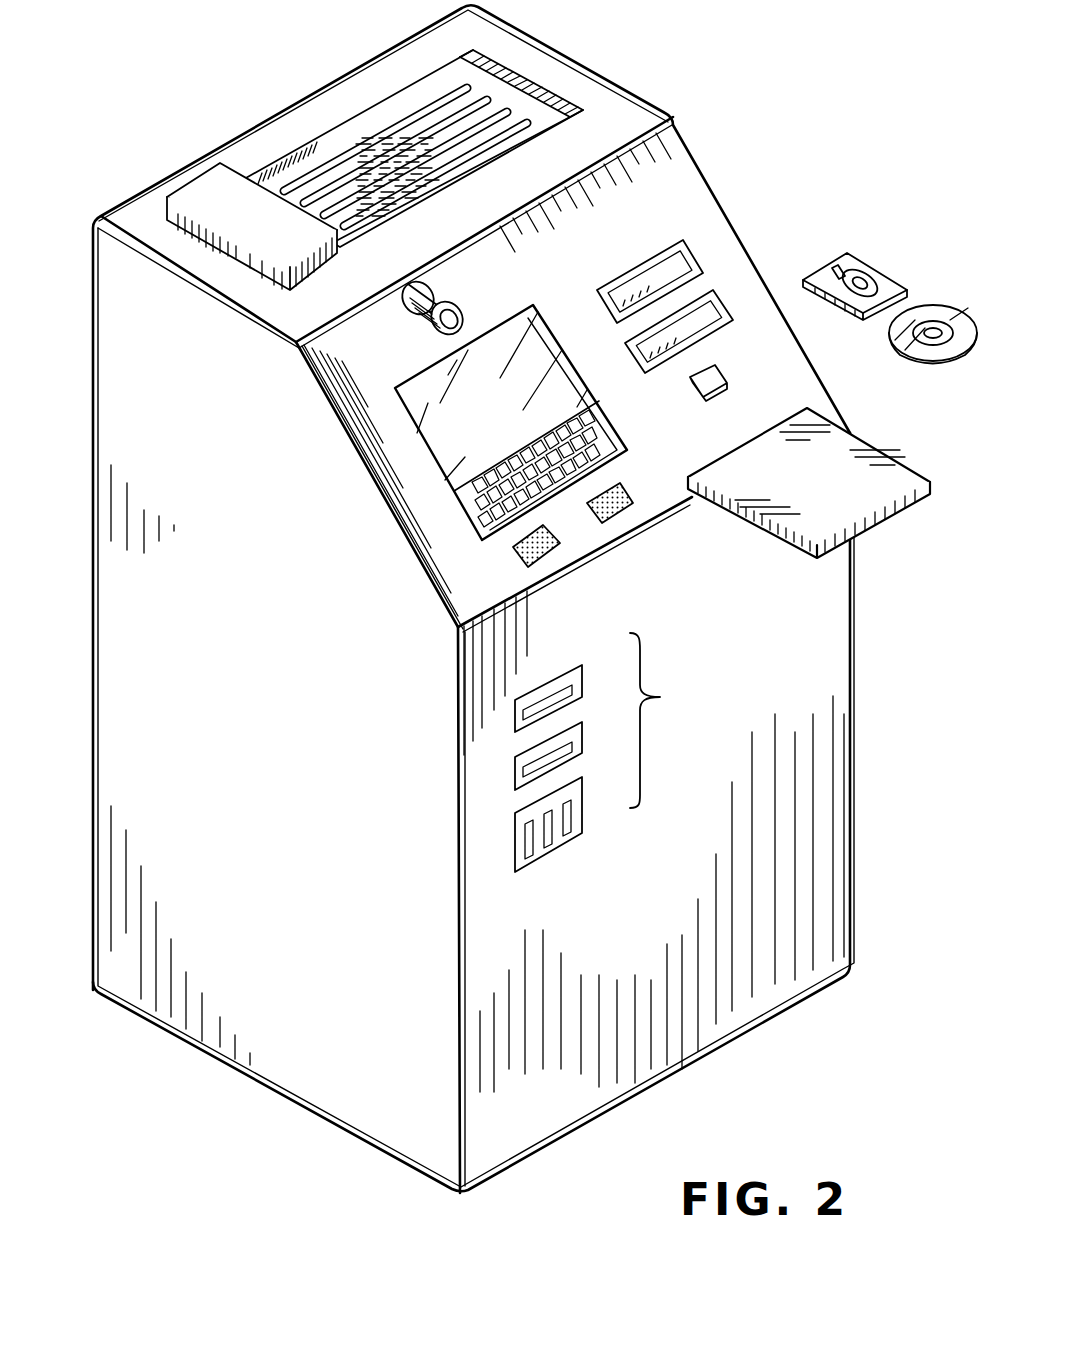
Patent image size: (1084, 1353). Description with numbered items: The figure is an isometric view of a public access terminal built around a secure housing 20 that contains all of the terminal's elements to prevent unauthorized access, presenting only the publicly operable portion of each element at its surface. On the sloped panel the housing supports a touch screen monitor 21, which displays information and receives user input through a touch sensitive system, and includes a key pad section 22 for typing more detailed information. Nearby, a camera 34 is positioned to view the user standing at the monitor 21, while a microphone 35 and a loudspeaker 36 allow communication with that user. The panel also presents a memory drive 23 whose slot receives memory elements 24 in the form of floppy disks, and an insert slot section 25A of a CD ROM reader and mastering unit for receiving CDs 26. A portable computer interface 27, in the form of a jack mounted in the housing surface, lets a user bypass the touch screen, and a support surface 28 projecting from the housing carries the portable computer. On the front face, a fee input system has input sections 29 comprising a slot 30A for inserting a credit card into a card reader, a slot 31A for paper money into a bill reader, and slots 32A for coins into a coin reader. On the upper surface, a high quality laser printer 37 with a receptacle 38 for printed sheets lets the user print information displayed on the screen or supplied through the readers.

The secure housing 20 is at (697, 134).
The touch screen monitor 21 is at (446, 440).
The key pad section 22 is at (598, 432).
The memory drive 23 is at (690, 238).
The memory elements 24 is at (871, 262).
The insert slot section 25A is at (713, 309).
The CD 26 is at (931, 346).
The portable computer interface 27 is at (714, 384).
The support surface 28 is at (876, 463).
The input sections 29 is at (660, 697).
The input section of card reader 30A is at (510, 718).
The input section of bill reader 31A is at (510, 773).
The input sections of coin reader 32A is at (510, 842).
The camera 34 is at (440, 292).
The microphone 35 is at (546, 542).
The loudspeaker 36 is at (616, 510).
The laser printer 37 is at (216, 186).
The receptacle 38 is at (378, 145).